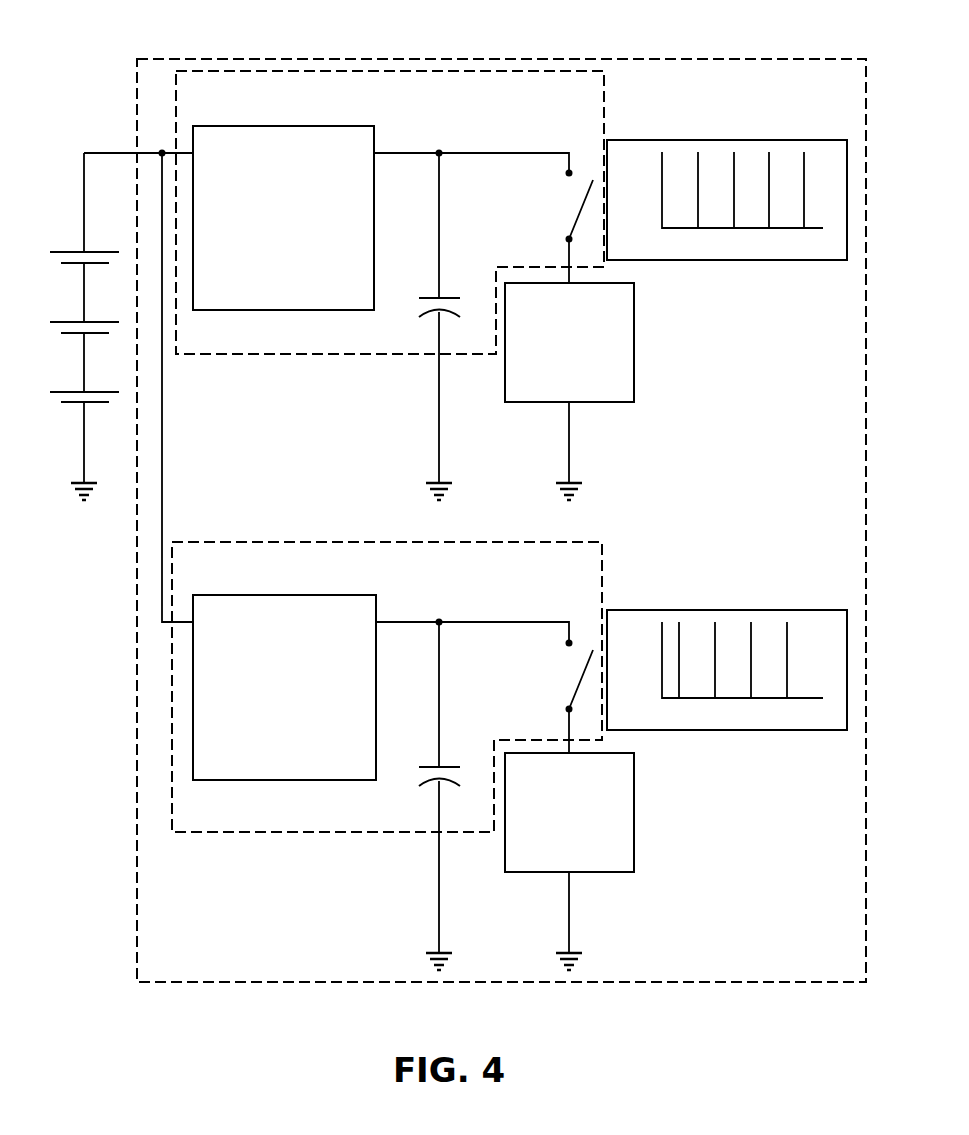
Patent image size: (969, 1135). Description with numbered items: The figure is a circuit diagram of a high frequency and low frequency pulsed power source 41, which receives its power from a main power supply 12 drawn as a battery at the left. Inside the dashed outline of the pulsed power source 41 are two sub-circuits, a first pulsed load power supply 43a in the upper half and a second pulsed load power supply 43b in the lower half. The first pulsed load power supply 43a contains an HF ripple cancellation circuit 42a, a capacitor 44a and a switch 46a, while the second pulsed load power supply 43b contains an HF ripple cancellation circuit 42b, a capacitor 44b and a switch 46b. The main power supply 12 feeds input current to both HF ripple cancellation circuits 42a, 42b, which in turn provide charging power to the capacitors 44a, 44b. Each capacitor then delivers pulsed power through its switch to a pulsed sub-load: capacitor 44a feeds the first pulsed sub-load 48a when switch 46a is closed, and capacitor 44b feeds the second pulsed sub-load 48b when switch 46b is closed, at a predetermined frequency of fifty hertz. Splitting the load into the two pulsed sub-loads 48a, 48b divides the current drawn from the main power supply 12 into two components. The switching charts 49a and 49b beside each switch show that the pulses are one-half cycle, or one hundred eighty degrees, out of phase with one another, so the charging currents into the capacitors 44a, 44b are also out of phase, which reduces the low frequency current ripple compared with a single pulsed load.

The pulsed power source 41 is at (492, 59).
The main power supply 12 is at (67, 322).
The HF ripple cancellation circuit 42a is at (285, 126).
The HF ripple cancellation circuit 42b is at (285, 595).
The first pulsed load power supply 43a is at (338, 354).
The second pulsed load power supply 43b is at (352, 833).
The capacitor 44a is at (450, 298).
The capacitor 44b is at (450, 767).
The switch 46a is at (572, 172).
The switch 46b is at (572, 642).
The first pulsed sub-load 48a is at (634, 341).
The second pulsed sub-load 48b is at (634, 811).
The switching chart 49a is at (727, 140).
The switching chart 49b is at (727, 610).